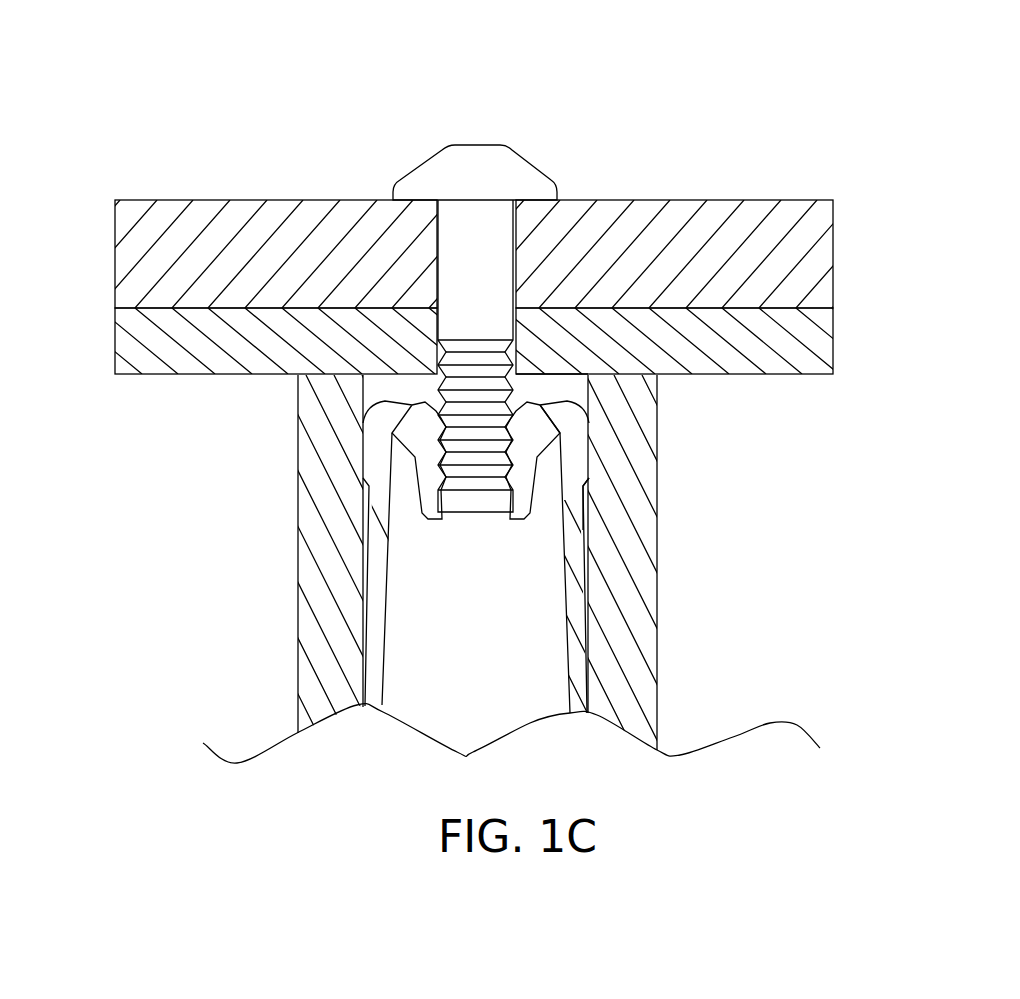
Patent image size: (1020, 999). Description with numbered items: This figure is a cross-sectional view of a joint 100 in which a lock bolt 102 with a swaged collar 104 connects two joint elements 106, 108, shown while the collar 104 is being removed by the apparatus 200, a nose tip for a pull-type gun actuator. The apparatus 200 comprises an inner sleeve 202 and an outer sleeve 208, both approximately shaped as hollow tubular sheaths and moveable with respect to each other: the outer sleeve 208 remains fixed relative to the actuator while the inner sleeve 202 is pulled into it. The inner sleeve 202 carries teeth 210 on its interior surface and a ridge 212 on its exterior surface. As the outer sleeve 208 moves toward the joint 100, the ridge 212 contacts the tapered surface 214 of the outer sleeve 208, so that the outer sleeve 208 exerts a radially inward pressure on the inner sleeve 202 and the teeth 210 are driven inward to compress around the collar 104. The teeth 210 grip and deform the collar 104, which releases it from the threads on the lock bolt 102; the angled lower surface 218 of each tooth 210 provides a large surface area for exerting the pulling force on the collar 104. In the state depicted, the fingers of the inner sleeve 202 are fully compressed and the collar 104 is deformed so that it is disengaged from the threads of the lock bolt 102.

The joint 100 is at (526, 263).
The lock bolt 102 is at (412, 155).
The swaged collar 104 is at (555, 438).
The joint element 106 is at (184, 200).
The joint element 108 is at (180, 375).
The apparatus 200 is at (489, 568).
The inner sleeve 202 is at (372, 513).
The outer sleeve 208 is at (297, 430).
The teeth 210 is at (543, 410).
The ridge 212 is at (590, 485).
The tapered surface 214 is at (595, 383).
The angled lower surface 218 is at (549, 427).